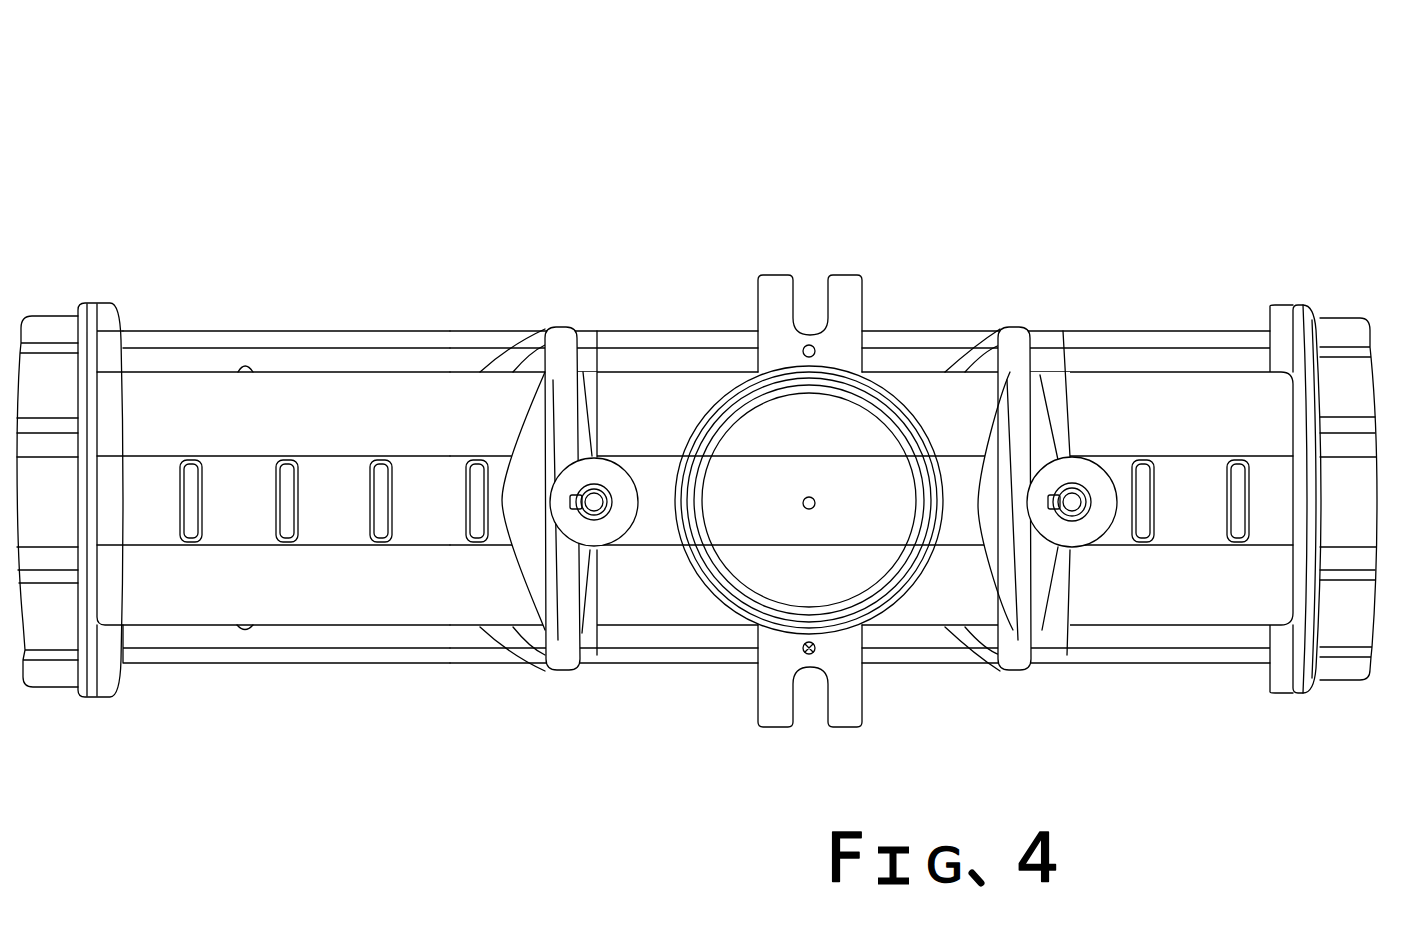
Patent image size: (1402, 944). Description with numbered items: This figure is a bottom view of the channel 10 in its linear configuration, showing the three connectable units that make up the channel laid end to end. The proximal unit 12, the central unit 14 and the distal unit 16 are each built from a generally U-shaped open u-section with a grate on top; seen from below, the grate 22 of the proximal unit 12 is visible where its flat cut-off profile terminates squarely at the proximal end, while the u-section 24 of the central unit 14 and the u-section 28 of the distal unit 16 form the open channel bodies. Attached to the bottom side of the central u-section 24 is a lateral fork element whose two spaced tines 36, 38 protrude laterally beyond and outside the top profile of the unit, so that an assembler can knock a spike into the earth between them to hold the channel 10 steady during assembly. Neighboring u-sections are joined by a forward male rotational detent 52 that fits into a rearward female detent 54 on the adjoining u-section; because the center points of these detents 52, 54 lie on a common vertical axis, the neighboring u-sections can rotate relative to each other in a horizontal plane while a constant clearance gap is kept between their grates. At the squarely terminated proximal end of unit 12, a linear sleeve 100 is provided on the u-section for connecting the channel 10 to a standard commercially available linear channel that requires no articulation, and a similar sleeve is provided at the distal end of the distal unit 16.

The channel 10 is at (916, 136).
The unit 12 is at (385, 321).
The unit 14 is at (951, 314).
The unit 16 is at (1236, 311).
The grate 22 is at (187, 422).
The u-section 24 is at (631, 431).
The u-section 28 is at (1100, 410).
The tine 36 is at (773, 275).
The tine 38 is at (850, 276).
The forward male rotational detent 52 is at (583, 517).
The rearward female detent 54 is at (632, 530).
The linear sleeve 100 is at (62, 299).